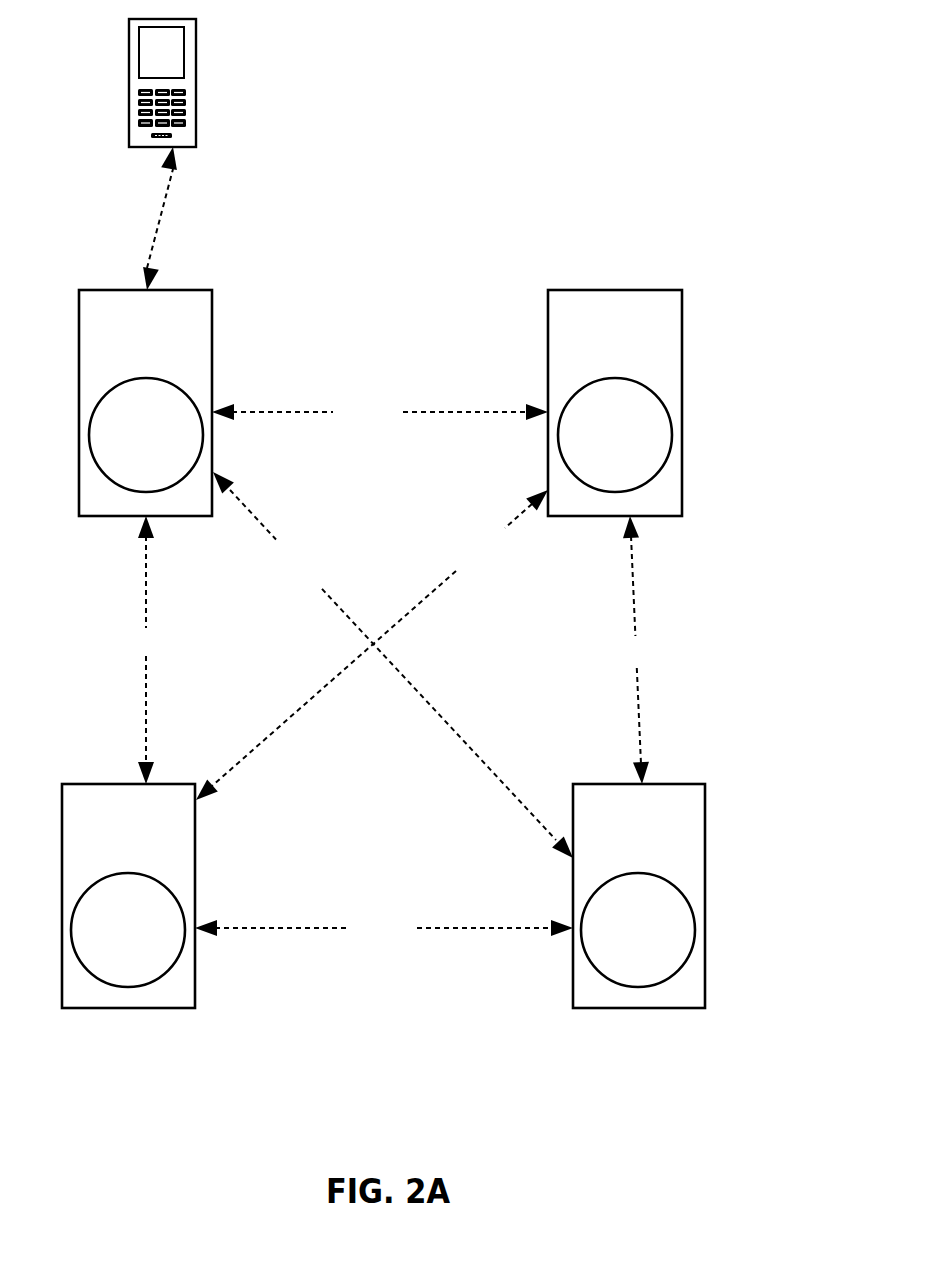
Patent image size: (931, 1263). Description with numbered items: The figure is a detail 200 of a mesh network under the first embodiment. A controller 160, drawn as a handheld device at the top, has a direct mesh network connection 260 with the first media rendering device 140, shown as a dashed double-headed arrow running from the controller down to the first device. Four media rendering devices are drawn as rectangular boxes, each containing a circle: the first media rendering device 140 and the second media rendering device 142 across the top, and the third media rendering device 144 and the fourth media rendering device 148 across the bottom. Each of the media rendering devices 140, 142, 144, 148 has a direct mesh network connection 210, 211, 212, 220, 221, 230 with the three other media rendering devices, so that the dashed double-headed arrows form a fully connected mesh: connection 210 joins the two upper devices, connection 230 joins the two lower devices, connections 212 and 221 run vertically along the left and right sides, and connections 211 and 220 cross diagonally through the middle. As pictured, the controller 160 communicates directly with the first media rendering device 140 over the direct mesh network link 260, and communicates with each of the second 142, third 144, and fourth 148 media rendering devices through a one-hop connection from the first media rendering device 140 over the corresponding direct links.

The controller 160 is at (135, 138).
The direct mesh network connection 260 is at (160, 218).
The first media rendering device 140 is at (125, 320).
The second media rendering device 142 is at (594, 320).
The third media rendering device 144 is at (107, 814).
The fourth media rendering device 148 is at (617, 814).
The direct mesh network connection 210 is at (380, 412).
The direct mesh network connection 211 is at (393, 665).
The direct mesh network connection 212 is at (146, 650).
The direct mesh network connection 220 is at (372, 645).
The direct mesh network connection 221 is at (637, 650).
The direct mesh network connection 230 is at (384, 928).
The detail of the mesh network 200 is at (733, 1040).